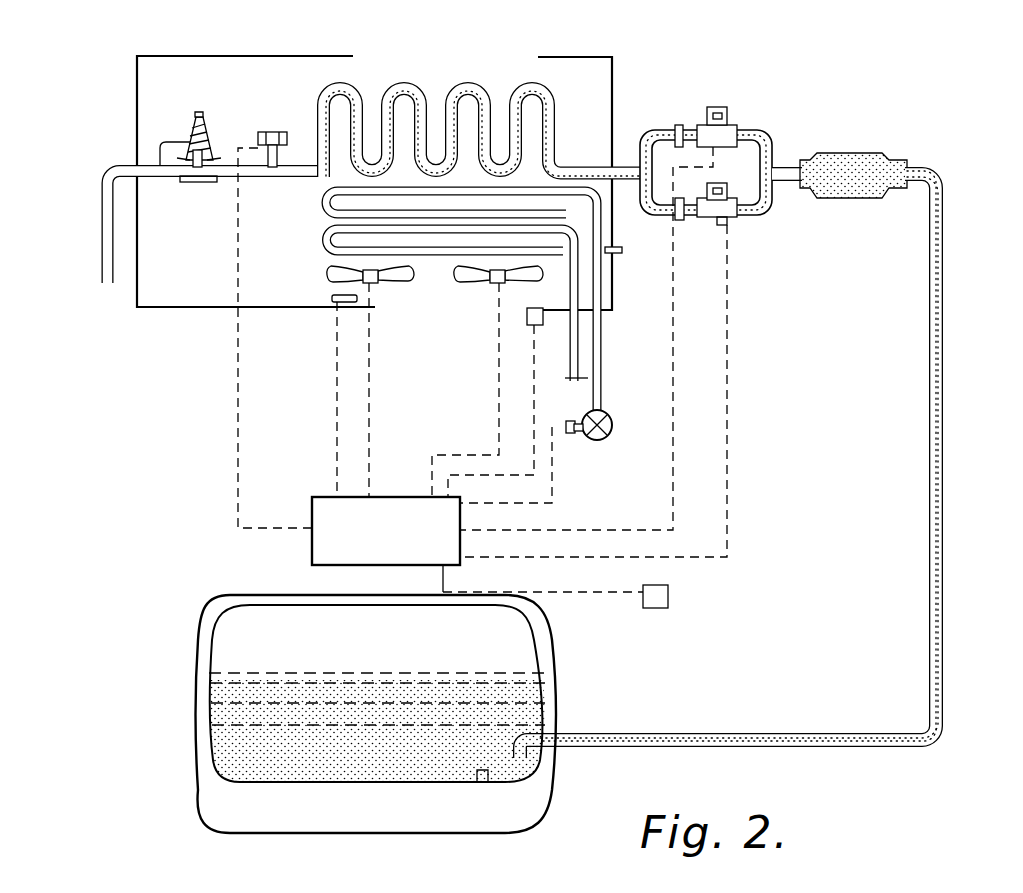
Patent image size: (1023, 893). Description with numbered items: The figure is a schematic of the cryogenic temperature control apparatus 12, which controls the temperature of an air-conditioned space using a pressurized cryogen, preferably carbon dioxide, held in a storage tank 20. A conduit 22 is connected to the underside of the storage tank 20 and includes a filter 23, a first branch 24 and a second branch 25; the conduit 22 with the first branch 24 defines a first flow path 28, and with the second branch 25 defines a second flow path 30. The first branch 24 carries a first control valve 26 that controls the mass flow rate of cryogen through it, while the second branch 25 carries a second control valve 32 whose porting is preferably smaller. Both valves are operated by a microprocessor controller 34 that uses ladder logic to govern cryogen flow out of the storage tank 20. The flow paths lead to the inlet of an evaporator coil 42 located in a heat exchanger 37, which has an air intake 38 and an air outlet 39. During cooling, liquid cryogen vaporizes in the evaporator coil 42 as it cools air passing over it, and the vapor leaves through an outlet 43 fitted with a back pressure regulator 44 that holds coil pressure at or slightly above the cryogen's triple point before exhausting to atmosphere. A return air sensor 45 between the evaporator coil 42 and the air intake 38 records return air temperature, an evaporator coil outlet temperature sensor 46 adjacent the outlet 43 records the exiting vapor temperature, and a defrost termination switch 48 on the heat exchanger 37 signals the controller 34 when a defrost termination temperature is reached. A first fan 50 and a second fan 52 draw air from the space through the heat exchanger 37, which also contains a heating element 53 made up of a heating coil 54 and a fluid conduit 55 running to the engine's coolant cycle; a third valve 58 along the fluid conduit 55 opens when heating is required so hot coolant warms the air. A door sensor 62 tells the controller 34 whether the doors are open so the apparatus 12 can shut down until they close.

The cryogenic temperature control apparatus 12 is at (708, 65).
The storage tank 20 is at (372, 658).
The conduit 22 is at (945, 446).
The filter 23 is at (880, 157).
The first branch 24 is at (770, 134).
The second branch 25 is at (766, 208).
The first control valve 26 is at (728, 107).
The first flow path 28 is at (668, 126).
The second flow path 30 is at (664, 222).
The second control valve 32 is at (716, 226).
The microprocessor controller 34 is at (366, 546).
The heat exchanger 37 is at (267, 33).
The air intake 38 is at (375, 307).
The air outlet 39 is at (538, 57).
The evaporator coil 42 is at (554, 118).
The outlet 43 is at (149, 178).
The back pressure regulator 44 is at (224, 95).
The return air sensor 45 is at (531, 327).
The evaporator coil outlet temperature sensor 46 is at (283, 131).
The defrost termination switch 48 is at (333, 296).
The first fan 50 is at (398, 279).
The second fan 52 is at (479, 282).
The heating element 53 is at (622, 250).
The heating coil 54 is at (324, 198).
The fluid conduit 55 is at (596, 328).
The third valve 58 is at (598, 440).
The door sensor 62 is at (668, 596).